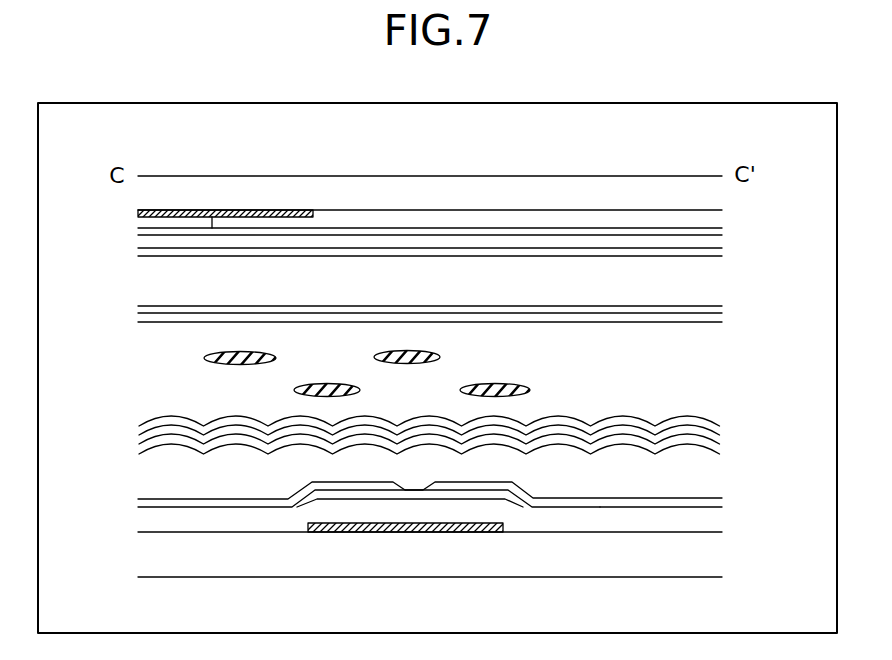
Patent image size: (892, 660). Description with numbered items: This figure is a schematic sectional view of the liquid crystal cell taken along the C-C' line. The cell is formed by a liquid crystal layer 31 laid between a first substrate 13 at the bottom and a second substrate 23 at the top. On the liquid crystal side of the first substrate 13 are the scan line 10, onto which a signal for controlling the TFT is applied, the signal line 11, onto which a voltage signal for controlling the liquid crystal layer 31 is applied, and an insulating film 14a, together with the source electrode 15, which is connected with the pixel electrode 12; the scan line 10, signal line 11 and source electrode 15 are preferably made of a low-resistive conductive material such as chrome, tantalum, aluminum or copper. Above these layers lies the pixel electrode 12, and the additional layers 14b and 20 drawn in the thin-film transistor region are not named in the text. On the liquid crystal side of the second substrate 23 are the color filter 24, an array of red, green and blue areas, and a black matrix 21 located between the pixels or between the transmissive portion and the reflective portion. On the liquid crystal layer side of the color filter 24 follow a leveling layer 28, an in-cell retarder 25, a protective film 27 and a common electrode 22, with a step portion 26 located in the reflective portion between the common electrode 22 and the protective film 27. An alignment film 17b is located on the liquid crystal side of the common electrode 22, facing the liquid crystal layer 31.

The scan line 10 is at (403, 533).
The signal line 11 is at (145, 502).
The pixel electrode 12 is at (718, 448).
The first substrate 13 is at (715, 556).
The insulating film 14a is at (715, 520).
The passivation insulating film 14b is at (715, 476).
The source electrode 15 is at (628, 502).
The alignment film 17b is at (718, 319).
The source/drain electrode 20 is at (517, 502).
The black matrix 21 is at (228, 210).
The common electrode 22 is at (145, 313).
The second substrate 23 is at (145, 197).
The color filter 24 is at (430, 159).
The in-cell retarder 25 is at (718, 237).
The step portion 26 is at (145, 281).
The protective film 27 is at (718, 251).
The leveling layer 28 is at (718, 229).
The liquid crystal layer 31 is at (445, 357).